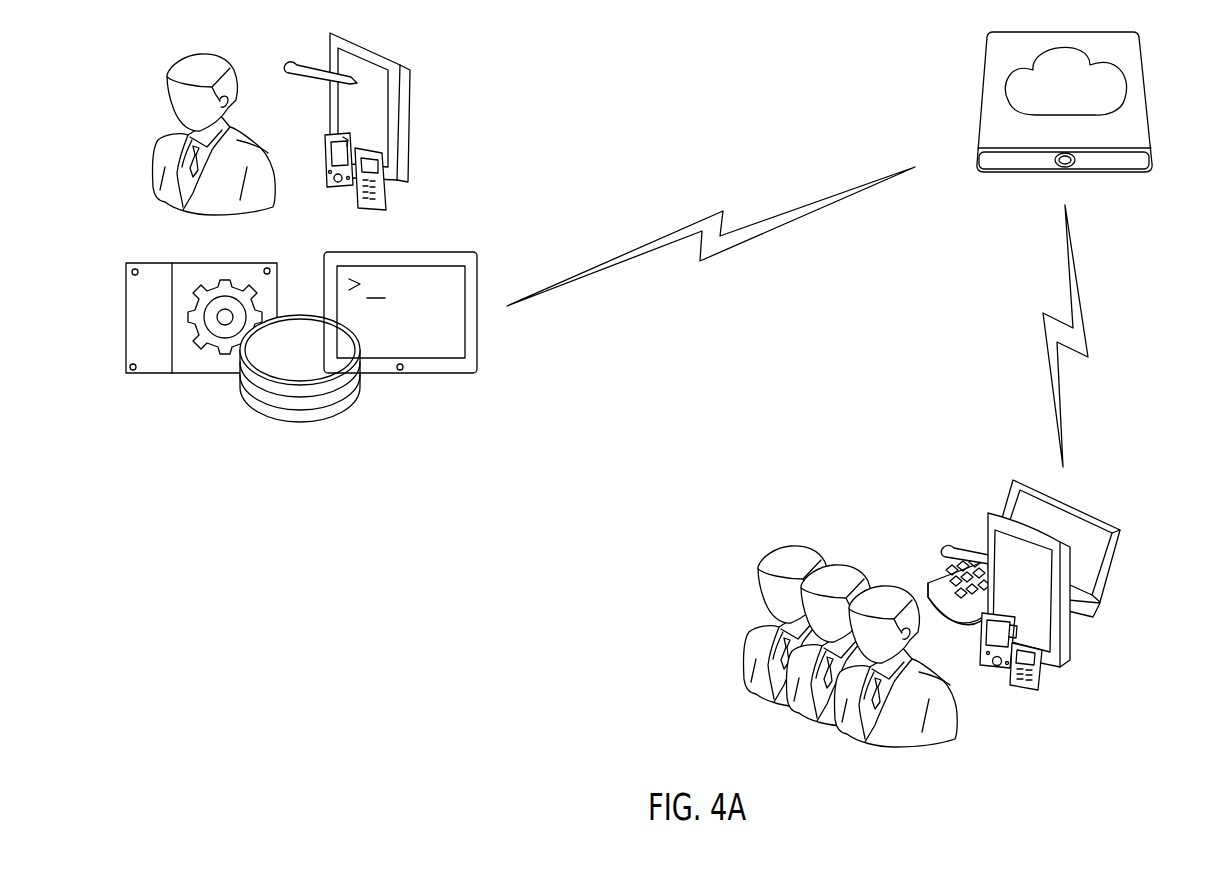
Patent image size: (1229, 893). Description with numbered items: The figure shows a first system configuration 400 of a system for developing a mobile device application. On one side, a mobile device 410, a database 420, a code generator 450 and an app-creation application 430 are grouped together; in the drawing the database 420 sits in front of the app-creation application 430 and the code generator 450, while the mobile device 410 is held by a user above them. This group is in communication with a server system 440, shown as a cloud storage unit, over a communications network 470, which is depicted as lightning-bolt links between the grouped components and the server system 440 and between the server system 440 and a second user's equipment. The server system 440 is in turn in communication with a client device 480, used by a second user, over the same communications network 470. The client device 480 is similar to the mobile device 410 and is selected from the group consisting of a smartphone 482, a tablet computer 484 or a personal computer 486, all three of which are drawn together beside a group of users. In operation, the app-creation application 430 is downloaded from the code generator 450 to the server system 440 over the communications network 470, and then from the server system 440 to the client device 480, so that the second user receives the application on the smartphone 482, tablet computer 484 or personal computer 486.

The first system configuration 400 is at (673, 165).
The mobile device 410 is at (413, 167).
The database 420 is at (350, 405).
The app-creation application 430 is at (187, 375).
The server system 440 is at (1155, 148).
The code generator 450 is at (467, 375).
The communications network 470 is at (745, 243).
The client device 480 is at (961, 600).
The smartphone 482 is at (1000, 680).
The tablet computer 484 is at (992, 510).
The personal computer 486 is at (1080, 500).